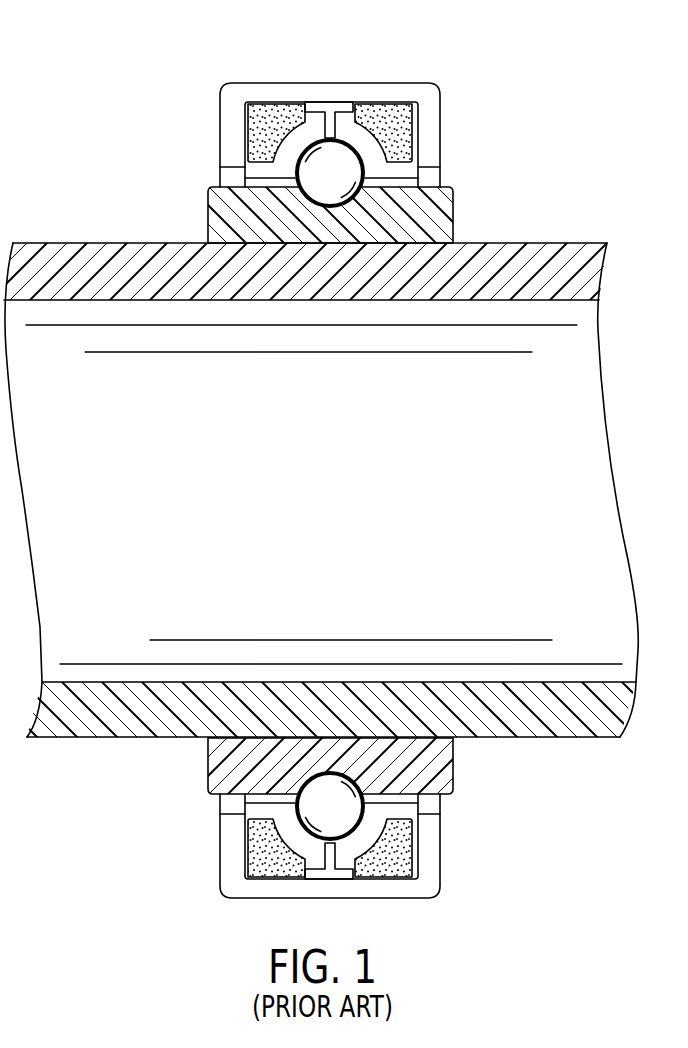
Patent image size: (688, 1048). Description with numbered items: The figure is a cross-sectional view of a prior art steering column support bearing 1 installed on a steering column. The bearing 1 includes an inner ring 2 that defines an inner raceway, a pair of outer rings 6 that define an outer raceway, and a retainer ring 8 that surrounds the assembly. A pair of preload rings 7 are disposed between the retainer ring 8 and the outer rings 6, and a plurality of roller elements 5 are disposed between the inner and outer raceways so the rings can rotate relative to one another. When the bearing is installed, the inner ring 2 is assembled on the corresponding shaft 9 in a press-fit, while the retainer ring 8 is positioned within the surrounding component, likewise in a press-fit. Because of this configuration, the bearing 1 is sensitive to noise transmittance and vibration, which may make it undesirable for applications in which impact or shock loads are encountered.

The steering column support bearing 1 is at (146, 86).
The inner ring 2 is at (455, 213).
The roller elements 5 is at (323, 170).
The outer rings 6 is at (287, 823).
The preload rings 7 is at (410, 855).
The retainer ring 8 is at (222, 128).
The shaft 9 is at (125, 737).